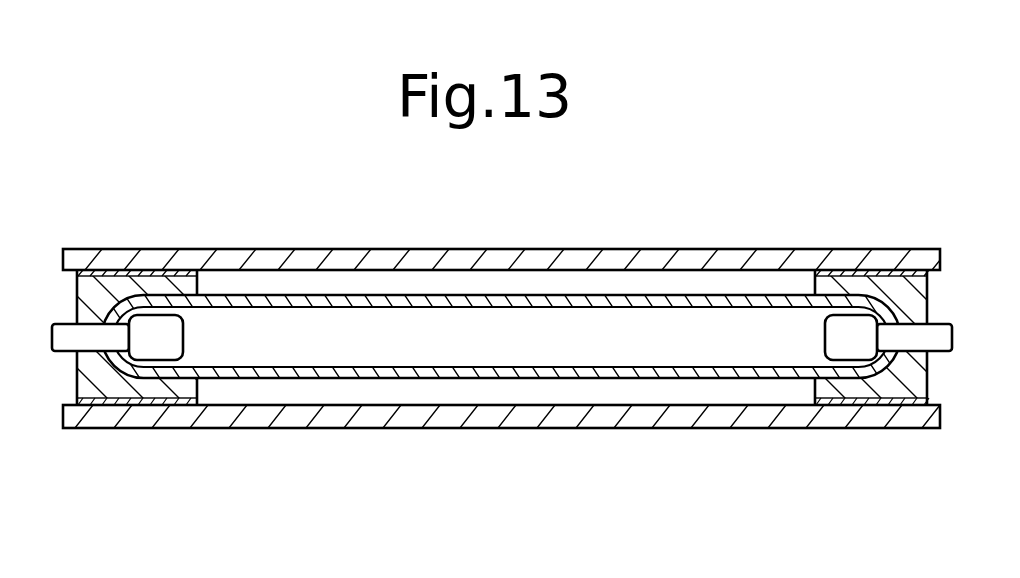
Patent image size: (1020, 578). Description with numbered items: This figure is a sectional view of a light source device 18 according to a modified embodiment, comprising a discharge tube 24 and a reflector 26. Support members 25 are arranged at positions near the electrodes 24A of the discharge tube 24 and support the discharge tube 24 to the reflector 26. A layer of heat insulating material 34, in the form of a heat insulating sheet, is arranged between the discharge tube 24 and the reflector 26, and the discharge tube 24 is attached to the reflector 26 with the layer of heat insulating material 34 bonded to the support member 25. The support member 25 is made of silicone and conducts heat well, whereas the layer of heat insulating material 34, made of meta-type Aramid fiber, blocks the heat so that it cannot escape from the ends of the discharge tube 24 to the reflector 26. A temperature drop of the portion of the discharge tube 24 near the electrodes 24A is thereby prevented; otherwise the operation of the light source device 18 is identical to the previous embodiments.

The light source device 18 is at (510, 332).
The discharge tube 24 is at (410, 300).
The electrodes 24A is at (158, 341).
The support member 25 is at (102, 380).
The reflector 26 is at (535, 262).
The layer of heat insulating material 34 is at (96, 270).